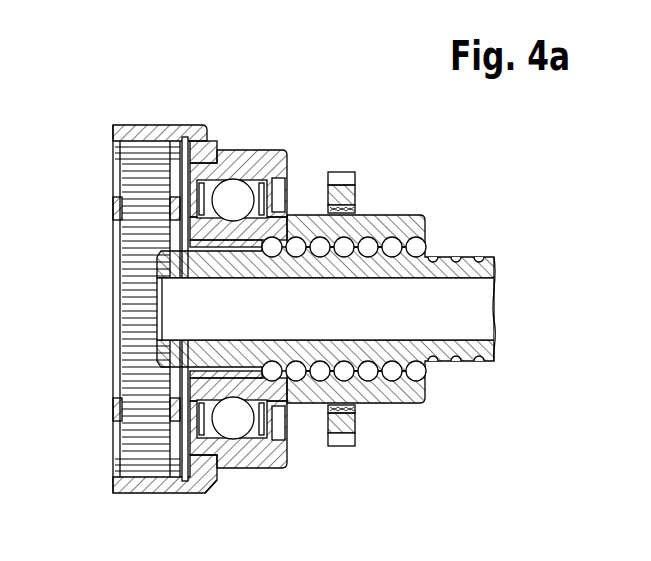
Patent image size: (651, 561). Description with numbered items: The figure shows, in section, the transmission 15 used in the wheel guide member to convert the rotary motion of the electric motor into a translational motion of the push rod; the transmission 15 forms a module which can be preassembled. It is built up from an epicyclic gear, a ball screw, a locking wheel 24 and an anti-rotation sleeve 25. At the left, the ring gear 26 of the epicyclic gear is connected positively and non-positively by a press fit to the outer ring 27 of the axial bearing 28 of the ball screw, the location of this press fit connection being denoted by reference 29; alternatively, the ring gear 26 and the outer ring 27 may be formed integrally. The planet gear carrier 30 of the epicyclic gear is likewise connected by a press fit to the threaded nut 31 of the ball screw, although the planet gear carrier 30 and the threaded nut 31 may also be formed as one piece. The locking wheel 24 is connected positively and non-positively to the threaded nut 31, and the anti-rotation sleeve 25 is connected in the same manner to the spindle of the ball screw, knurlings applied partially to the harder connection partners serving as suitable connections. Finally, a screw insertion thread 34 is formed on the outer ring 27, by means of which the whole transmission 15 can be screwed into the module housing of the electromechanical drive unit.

The transmission 15 is at (452, 226).
The locking wheel 24 is at (344, 172).
The anti-rotation sleeve 25 is at (604, 545).
The ring gear 26 is at (140, 125).
The outer ring 27 is at (253, 163).
The axial bearing 28 is at (237, 423).
The press fit connection 29 is at (205, 492).
The planet gear carrier 30 is at (207, 362).
The threaded nut 31 is at (390, 222).
The screw insertion thread 34 is at (232, 150).